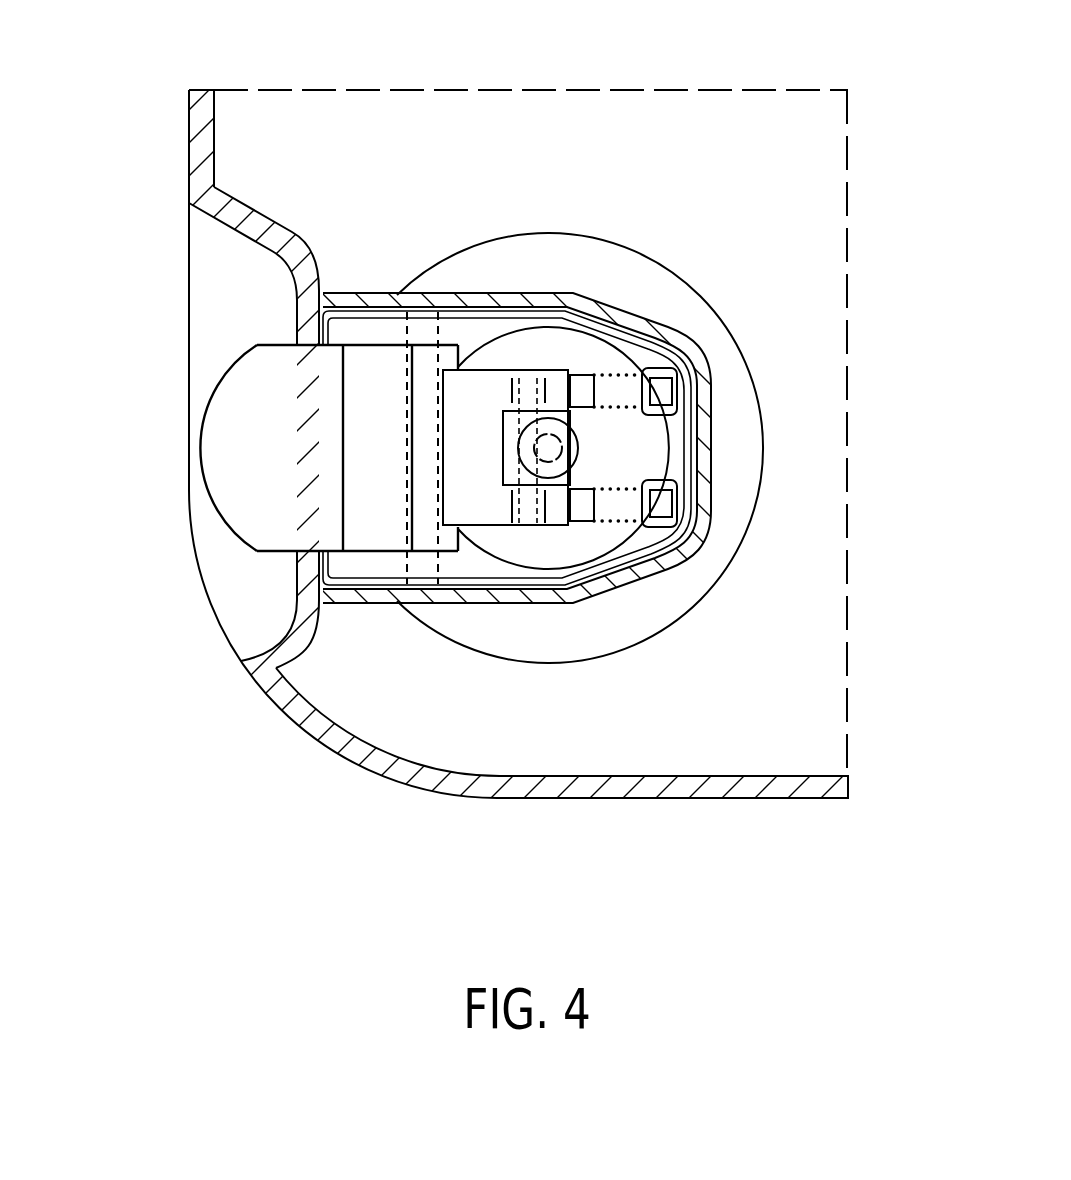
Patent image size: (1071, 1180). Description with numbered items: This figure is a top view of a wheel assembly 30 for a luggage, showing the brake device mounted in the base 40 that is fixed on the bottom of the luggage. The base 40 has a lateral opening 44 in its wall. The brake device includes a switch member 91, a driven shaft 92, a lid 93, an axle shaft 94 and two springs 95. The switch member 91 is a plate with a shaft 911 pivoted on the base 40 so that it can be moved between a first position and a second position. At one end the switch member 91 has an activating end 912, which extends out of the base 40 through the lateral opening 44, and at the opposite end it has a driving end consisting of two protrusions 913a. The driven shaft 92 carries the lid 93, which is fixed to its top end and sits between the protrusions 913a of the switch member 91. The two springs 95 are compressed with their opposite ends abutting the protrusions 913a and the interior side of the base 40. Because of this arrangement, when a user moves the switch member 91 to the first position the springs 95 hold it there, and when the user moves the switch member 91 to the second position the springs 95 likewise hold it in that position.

The wheel assembly 30 is at (140, 128).
The base 40 is at (388, 808).
The lateral opening 44 is at (293, 347).
The switch member 91 is at (266, 332).
The shaft 911 is at (425, 311).
The activating end 912 is at (213, 435).
The protrusions 913a is at (566, 368).
The axle shaft 94 is at (534, 367).
The springs 95 is at (627, 368).
The driven shaft 92 is at (565, 442).
The lid 93 is at (577, 458).